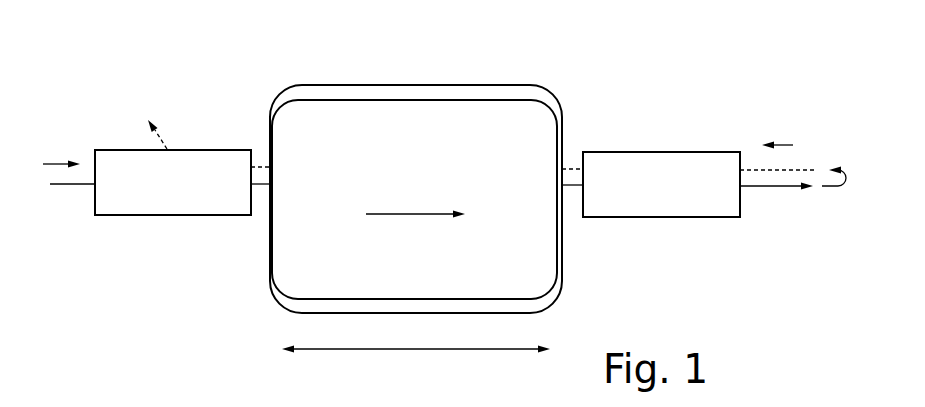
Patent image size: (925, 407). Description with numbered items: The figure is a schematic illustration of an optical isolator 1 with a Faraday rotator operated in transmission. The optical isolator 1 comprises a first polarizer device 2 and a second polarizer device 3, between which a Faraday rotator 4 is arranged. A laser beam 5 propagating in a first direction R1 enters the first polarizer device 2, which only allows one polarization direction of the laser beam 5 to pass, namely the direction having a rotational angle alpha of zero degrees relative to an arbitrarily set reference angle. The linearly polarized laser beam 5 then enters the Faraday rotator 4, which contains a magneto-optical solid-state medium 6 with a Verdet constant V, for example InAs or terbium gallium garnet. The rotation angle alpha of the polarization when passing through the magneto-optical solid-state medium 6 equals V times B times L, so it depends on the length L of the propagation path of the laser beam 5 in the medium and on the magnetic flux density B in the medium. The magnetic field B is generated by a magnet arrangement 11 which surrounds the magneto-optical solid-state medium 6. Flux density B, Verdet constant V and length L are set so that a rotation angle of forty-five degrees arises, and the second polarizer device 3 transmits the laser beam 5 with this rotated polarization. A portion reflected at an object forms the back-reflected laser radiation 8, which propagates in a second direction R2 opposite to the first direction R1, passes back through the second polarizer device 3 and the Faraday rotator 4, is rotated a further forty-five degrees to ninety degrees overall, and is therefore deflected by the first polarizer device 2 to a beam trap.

The optical isolator 1 is at (439, 184).
The first polarizer device 2 is at (128, 203).
The second polarizer device 3 is at (708, 165).
The Faraday rotator 4 is at (580, 87).
The laser beam 5 is at (67, 186).
The magneto-optical solid-state medium 6 is at (525, 110).
The back-reflected laser radiation 8 is at (570, 165).
The magnet arrangement 11 is at (468, 96).
The first direction R1 is at (55, 164).
The second direction R2 is at (793, 145).
The magnetic flux density B is at (403, 215).
The length of the propagation path L is at (416, 336).